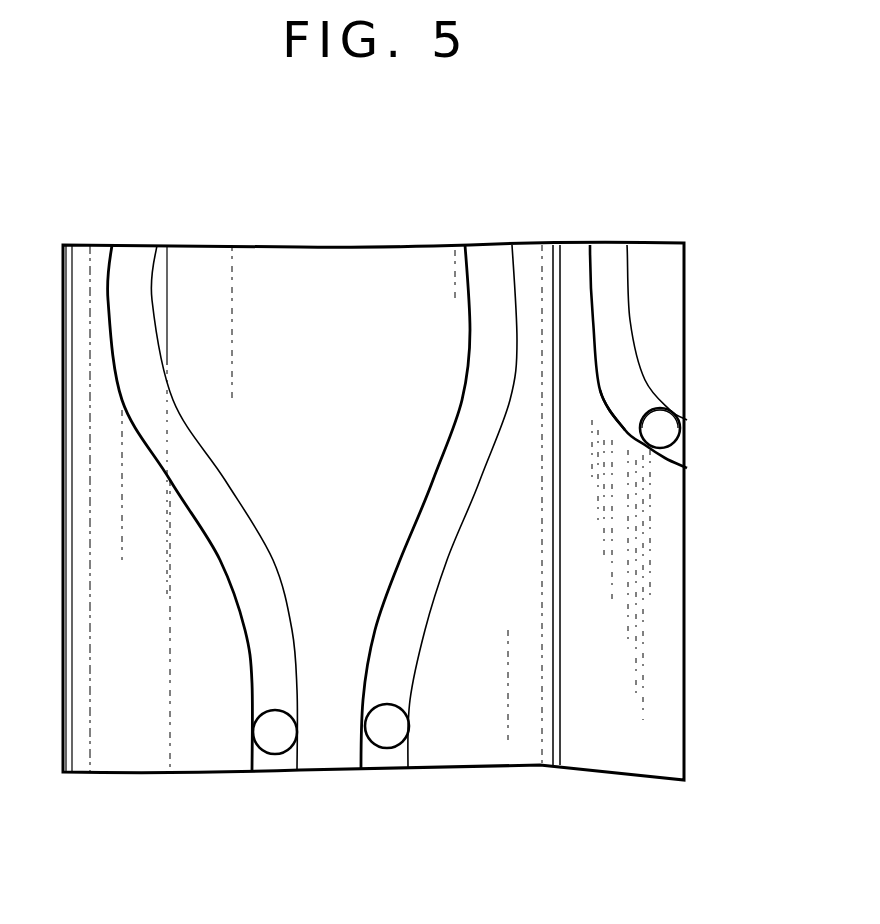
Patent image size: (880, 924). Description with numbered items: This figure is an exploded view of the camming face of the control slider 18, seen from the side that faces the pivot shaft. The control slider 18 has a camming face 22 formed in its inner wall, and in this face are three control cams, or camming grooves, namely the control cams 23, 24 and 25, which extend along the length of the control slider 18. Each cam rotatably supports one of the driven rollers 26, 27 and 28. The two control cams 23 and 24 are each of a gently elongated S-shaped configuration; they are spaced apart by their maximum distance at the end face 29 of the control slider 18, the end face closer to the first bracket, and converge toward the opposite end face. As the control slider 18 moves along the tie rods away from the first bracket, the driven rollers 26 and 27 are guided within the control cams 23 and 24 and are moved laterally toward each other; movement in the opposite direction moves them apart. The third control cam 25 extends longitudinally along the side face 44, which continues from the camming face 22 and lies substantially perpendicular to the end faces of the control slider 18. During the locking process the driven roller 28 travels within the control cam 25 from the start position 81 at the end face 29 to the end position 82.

The control slider 18 is at (686, 727).
The camming face 22 is at (322, 341).
The control cam 23 is at (237, 528).
The control cam 24 is at (432, 520).
The third control cam 25 is at (627, 400).
The driven roller 26 is at (275, 740).
The driven roller 27 is at (388, 735).
The driven roller 28 is at (663, 443).
The end face 29 is at (347, 245).
The side face 44 is at (590, 685).
The start position 81 is at (608, 245).
The end position 82 is at (670, 428).